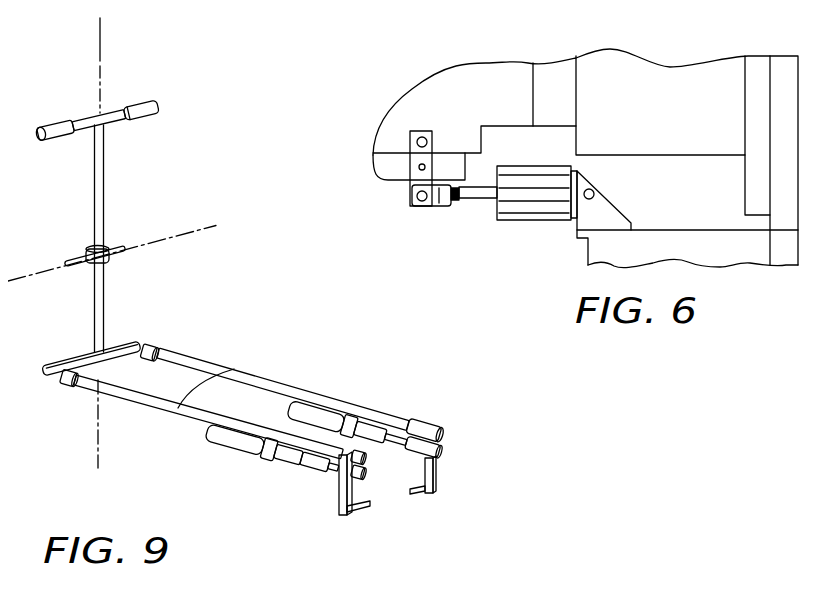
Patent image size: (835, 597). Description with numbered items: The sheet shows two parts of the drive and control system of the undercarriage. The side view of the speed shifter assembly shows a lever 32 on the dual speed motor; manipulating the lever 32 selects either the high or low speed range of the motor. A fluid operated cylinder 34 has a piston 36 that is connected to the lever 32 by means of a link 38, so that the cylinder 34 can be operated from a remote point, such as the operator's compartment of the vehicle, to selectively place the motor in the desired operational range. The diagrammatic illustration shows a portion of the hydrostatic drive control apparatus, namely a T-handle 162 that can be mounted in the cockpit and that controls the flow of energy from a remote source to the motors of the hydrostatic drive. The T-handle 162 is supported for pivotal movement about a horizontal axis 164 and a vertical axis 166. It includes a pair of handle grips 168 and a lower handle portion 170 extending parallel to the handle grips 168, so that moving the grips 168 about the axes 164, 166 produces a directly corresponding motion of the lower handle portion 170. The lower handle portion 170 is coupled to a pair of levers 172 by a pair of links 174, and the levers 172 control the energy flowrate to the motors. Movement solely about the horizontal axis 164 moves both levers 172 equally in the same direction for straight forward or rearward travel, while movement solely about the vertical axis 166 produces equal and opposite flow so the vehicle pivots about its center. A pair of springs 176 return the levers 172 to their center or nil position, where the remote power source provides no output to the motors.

In FIG. 6, the lever 32 is at (410, 150).
In FIG. 6, the fluid operated cylinder 34 is at (531, 193).
In FIG. 6, the piston 36 is at (476, 193).
In FIG. 6, the link 38 is at (434, 191).
In FIG. 9, the T-handle 162 is at (88, 296).
In FIG. 9, the horizontal axis 164 is at (195, 218).
In FIG. 9, the vertical axis 166 is at (92, 55).
In FIG. 9, the handle grips 168 is at (143, 107).
In FIG. 9, the lower handle portion 170 is at (107, 340).
In FIG. 9, the levers 172 is at (432, 465).
In FIG. 9, the links 174 is at (230, 371).
In FIG. 9, the springs 176 is at (325, 406).